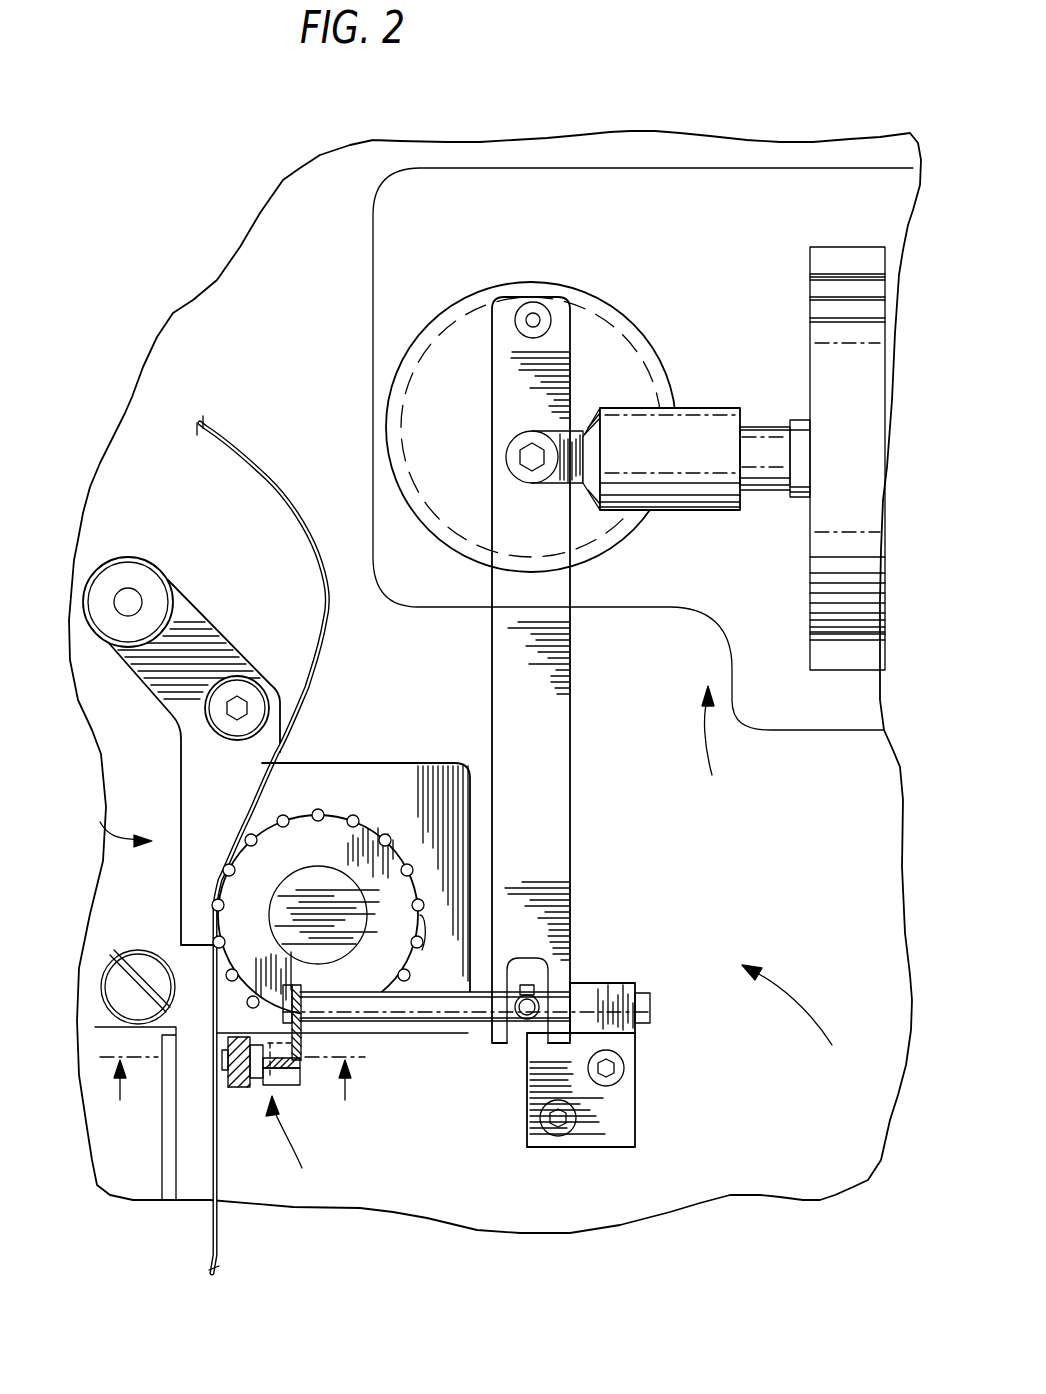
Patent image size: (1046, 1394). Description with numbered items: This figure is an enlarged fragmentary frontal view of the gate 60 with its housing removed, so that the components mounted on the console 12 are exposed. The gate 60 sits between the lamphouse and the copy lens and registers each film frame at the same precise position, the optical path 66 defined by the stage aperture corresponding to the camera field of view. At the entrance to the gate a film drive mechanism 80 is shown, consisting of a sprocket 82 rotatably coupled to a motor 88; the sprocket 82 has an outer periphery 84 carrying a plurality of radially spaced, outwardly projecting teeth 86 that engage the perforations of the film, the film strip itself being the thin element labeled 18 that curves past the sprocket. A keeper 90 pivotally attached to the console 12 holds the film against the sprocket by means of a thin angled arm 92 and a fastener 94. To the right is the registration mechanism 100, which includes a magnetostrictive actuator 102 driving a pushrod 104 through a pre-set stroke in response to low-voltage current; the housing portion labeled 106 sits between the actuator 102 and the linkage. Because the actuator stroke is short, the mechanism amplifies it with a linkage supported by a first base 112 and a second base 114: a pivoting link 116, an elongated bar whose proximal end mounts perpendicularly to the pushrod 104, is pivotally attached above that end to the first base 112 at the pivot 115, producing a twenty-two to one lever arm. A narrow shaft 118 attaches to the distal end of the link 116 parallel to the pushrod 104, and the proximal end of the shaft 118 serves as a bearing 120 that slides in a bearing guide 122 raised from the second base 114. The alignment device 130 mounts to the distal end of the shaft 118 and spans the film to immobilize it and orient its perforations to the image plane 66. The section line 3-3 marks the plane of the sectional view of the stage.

The console 12 is at (287, 183).
The web 18 is at (262, 793).
The gate 60 is at (112, 823).
The optical path 66 is at (213, 1072).
The film drive mechanism 80 is at (341, 836).
The sprocket 82 is at (310, 865).
The outer periphery 84 is at (300, 820).
The teeth 86 is at (422, 950).
The motor 88 is at (405, 763).
The keeper 90 is at (181, 750).
The angled arm 92 is at (196, 600).
The fastener 94 is at (262, 690).
The registration mechanism 100 is at (785, 877).
The actuator 102 is at (810, 270).
The pushrod 104 is at (765, 497).
The cylinder 106 is at (698, 408).
The first base 112 is at (470, 302).
The second base 114 is at (638, 1120).
The pivot 115 is at (548, 324).
The link 116 is at (573, 845).
The shaft 118 is at (468, 1035).
The bearing 120 is at (642, 1025).
The bearing guide 122 is at (610, 983).
The alignment device 130 is at (436, 1090).
The section line 3- 3 is at (232, 1099).